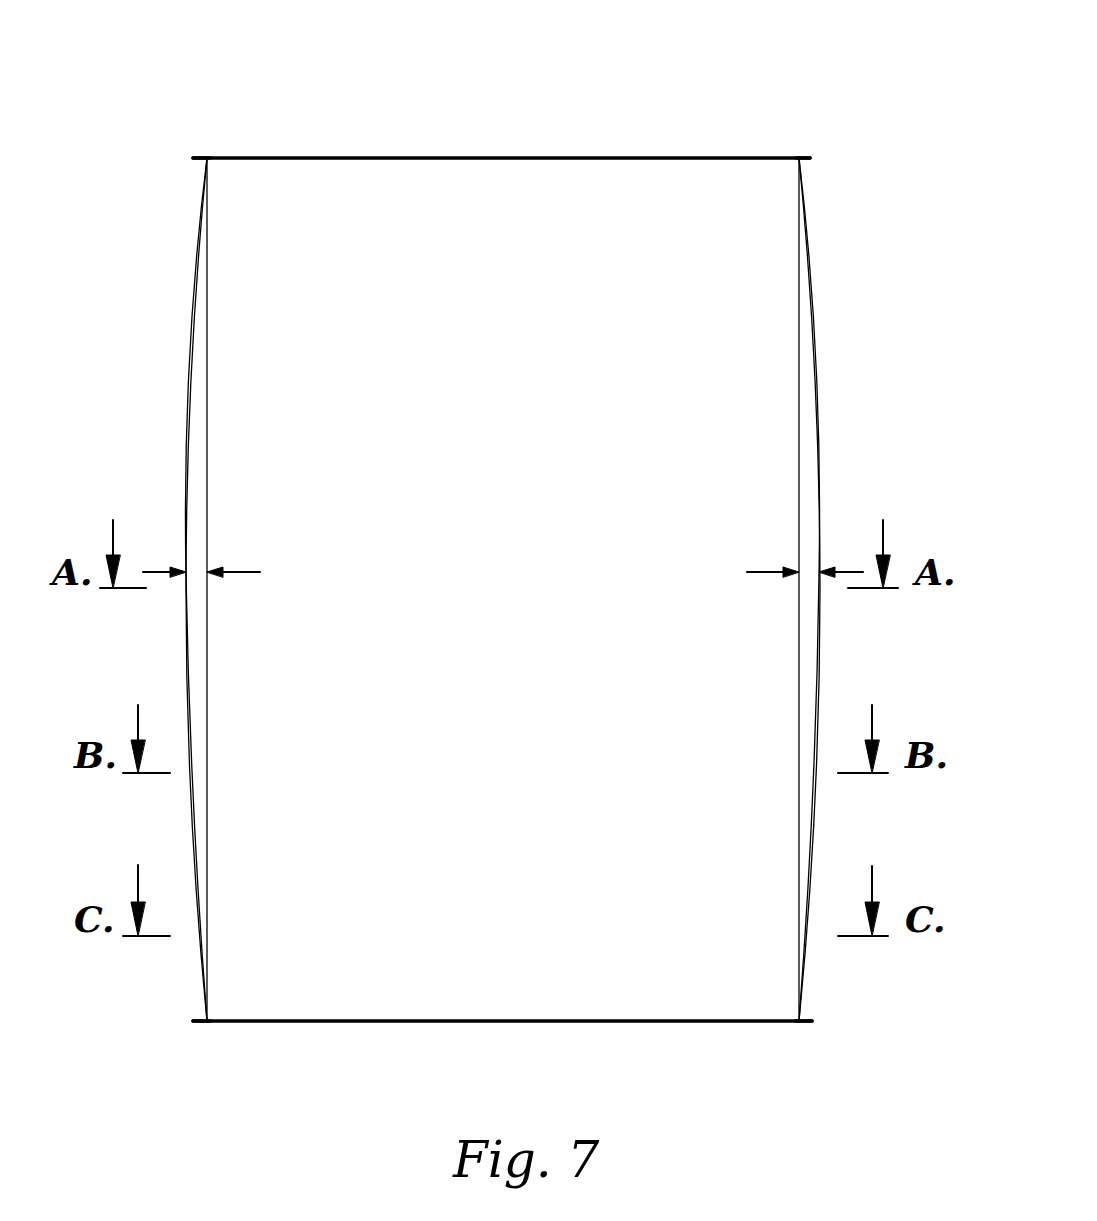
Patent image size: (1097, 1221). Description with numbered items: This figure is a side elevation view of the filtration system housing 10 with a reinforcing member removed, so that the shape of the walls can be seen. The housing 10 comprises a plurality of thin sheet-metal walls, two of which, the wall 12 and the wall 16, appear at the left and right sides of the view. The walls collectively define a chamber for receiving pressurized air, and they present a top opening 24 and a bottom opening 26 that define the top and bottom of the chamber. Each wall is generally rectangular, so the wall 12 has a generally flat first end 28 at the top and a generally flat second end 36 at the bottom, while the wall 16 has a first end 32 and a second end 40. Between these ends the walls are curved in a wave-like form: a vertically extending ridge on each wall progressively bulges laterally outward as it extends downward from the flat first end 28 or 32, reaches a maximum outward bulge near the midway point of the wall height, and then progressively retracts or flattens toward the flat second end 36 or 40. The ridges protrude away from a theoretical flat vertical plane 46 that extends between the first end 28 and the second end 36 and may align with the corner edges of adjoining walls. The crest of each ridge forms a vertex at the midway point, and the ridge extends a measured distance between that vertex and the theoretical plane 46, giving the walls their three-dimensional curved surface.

The housing 10 is at (684, 90).
The wall 12 is at (194, 589).
The wall 16 is at (802, 589).
The top opening 24 is at (503, 144).
The bottom opening 26 is at (620, 1034).
The first end 28 is at (207, 158).
The first end 32 is at (800, 166).
The second end 36 is at (207, 1021).
The second end 40 is at (800, 1010).
The vertical plane 46 is at (207, 352).